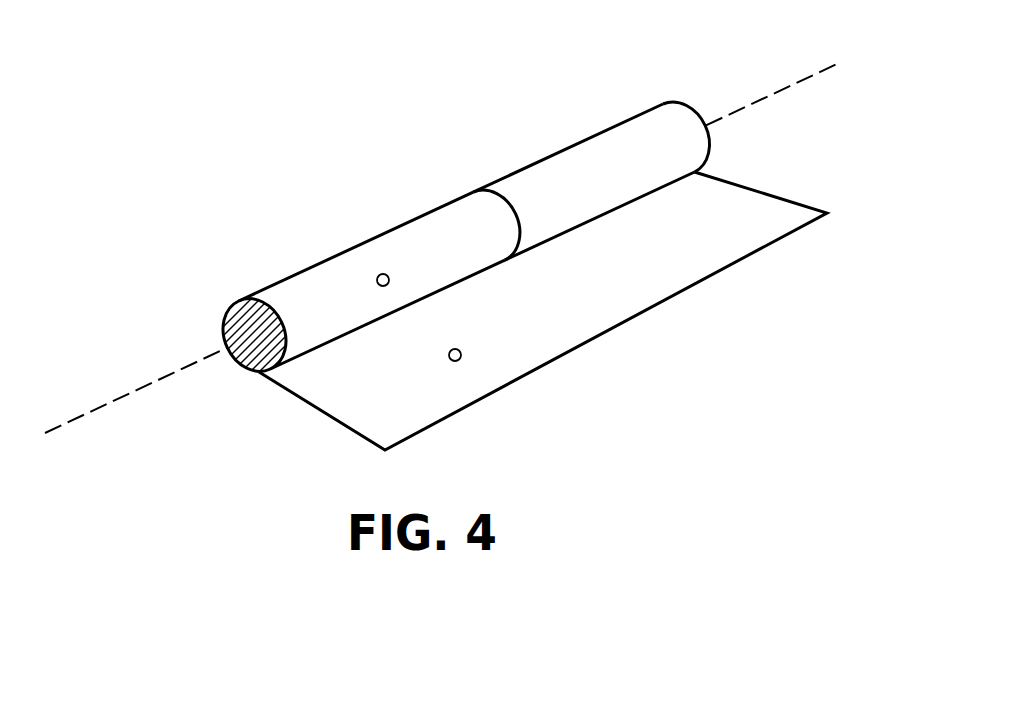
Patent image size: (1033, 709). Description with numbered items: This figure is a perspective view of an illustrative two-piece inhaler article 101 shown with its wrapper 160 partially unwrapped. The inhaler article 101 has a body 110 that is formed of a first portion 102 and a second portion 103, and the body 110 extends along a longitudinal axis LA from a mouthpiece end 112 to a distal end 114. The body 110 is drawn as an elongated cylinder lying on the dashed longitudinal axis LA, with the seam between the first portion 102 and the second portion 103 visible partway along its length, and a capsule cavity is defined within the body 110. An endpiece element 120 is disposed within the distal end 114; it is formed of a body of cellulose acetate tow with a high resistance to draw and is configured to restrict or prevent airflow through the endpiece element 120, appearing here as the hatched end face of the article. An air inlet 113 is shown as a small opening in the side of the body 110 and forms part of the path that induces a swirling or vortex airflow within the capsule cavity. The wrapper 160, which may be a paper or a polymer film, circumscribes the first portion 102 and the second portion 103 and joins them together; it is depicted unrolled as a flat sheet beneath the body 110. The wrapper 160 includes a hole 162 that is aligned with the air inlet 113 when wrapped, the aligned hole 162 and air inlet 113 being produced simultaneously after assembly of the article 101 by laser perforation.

The two-piece inhaler article 101 is at (443, 254).
The first portion 102 is at (617, 148).
The second portion 103 is at (293, 297).
The body 110 is at (443, 254).
The mouthpiece end 112 is at (683, 108).
The air inlet 113 is at (389, 274).
The distal end 114 is at (262, 383).
The endpiece element 120 is at (291, 346).
The wrapper 160 is at (631, 284).
The hole 162 is at (461, 357).
The longitudinal axis LA is at (80, 415).